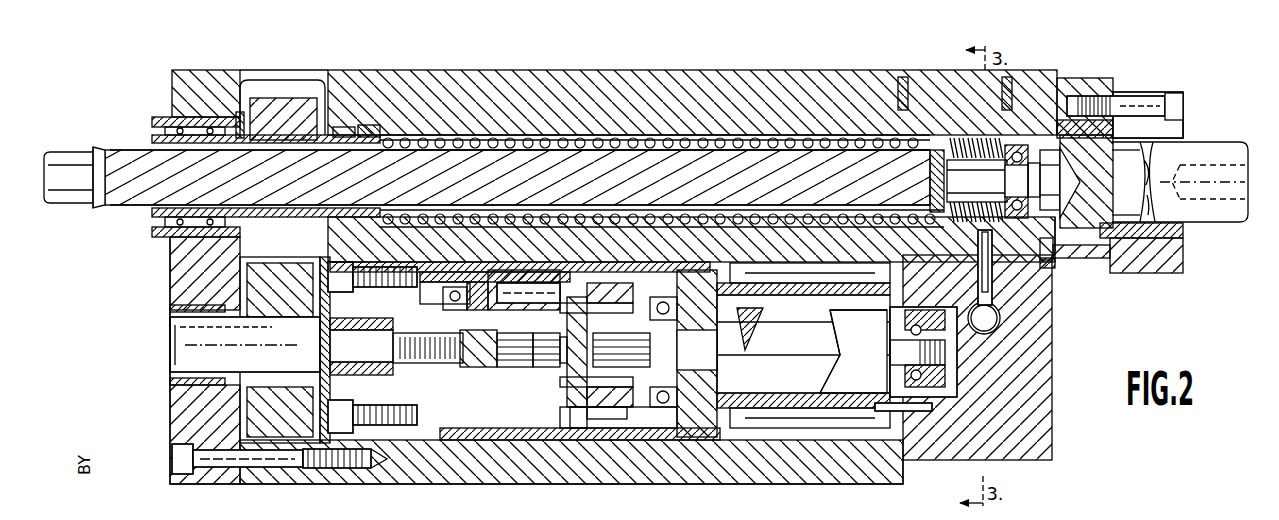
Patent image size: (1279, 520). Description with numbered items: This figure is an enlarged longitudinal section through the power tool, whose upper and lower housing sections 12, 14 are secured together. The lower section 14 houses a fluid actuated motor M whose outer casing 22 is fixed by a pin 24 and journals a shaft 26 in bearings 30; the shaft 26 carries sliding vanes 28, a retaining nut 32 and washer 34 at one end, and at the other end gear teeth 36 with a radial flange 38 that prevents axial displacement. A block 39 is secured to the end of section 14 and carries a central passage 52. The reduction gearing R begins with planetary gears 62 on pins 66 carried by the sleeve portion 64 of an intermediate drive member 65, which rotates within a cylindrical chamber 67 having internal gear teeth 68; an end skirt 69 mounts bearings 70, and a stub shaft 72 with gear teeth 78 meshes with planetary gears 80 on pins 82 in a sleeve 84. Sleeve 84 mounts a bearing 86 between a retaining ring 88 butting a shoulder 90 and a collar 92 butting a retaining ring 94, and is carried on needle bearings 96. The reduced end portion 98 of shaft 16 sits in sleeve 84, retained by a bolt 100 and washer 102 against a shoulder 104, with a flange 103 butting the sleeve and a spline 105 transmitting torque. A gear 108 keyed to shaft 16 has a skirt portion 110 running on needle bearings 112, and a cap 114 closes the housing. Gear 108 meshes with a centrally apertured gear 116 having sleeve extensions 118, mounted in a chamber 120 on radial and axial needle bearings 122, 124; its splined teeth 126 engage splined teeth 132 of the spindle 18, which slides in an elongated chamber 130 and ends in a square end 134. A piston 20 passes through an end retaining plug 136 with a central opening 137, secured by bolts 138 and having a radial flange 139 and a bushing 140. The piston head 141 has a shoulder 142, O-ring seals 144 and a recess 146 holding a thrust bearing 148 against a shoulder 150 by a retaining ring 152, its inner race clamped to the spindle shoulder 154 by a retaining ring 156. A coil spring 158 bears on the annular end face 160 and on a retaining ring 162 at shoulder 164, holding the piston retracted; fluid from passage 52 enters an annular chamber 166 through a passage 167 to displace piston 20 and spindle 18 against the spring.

The upper housing section 12 is at (443, 64).
The lower housing section 14 is at (147, 398).
The shaft 16 is at (190, 335).
The spindle 18 is at (113, 150).
The piston 20 is at (1196, 122).
The outer casing 22 is at (815, 480).
The pin 24 is at (908, 418).
The shaft 26 is at (695, 424).
The sliding vanes 28 is at (752, 322).
The bearings 30 is at (938, 384).
The retaining nut 32 is at (948, 360).
The washer 34 is at (935, 318).
The gear teeth 36 is at (631, 350).
The radial flange 38 is at (725, 360).
The block 39 is at (1010, 359).
The central passage 52 is at (978, 272).
The planetary gears 62 is at (636, 440).
The sleeve portion 64 is at (596, 403).
The intermediate drive member 65 is at (570, 385).
The pins 66 is at (596, 338).
The cylindrical chamber 67 is at (602, 440).
The gear teeth 68 is at (566, 440).
The end skirt 69 is at (674, 328).
The bearings 70 is at (666, 420).
The stub shaft 72 is at (546, 368).
The gear teeth 78 is at (518, 368).
The planetary gears 80 is at (530, 283).
The pins 82 is at (556, 270).
The sleeve 84 is at (320, 359).
The bearing 86 is at (432, 272).
The retaining ring 88 is at (468, 286).
The shoulder 90 is at (477, 282).
The collar 92 is at (378, 265).
The retaining ring 94 is at (372, 277).
The needle bearings 96 is at (322, 345).
The reduced diameter inner end portion 98 is at (340, 347).
The bolt 100 is at (480, 370).
The washer 102 is at (390, 419).
The flange 103 is at (295, 346).
The shoulder 104 is at (445, 283).
The spline 105 is at (361, 350).
The gear 108 is at (270, 299).
The skirt portion 110 is at (170, 310).
The needle bearings 112 is at (170, 381).
The cap 114 is at (170, 350).
The centrally apertured gear 116 is at (274, 100).
The axial sleeve extensions 118 is at (152, 128).
The chamber 120 is at (323, 84).
The radial needle bearings 122 is at (165, 118).
The axial needle bearings 124 is at (238, 113).
The splined teeth 126 is at (148, 150).
The elongated cylindrical chamber 130 is at (582, 136).
The splined teeth 132 is at (530, 150).
The square end 134 is at (58, 150).
The end retaining plug 136 is at (1140, 96).
The central opening 137 is at (1066, 100).
The bolts 138 is at (1162, 96).
The radial flange 139 is at (1104, 96).
The bushing 140 is at (1183, 230).
The piston head 141 is at (1085, 206).
The shoulder 142 is at (1118, 240).
The O-ring seals 144 is at (1032, 136).
The recess 146 is at (1055, 250).
The thrust bearing 148 is at (998, 310).
The shoulder 150 is at (997, 138).
The retaining ring 152 is at (968, 138).
The shoulder 154 is at (1003, 176).
The retaining ring 156 is at (1042, 165).
The coil spring 158 is at (841, 137).
The annular end face 160 is at (992, 292).
The retaining ring 162 is at (392, 128).
The shoulder 164 is at (372, 128).
The annular chamber 166 is at (1092, 260).
The passage 167 is at (1054, 286).
The fluid actuated motor M is at (777, 383).
The reduction gearing R is at (610, 462).